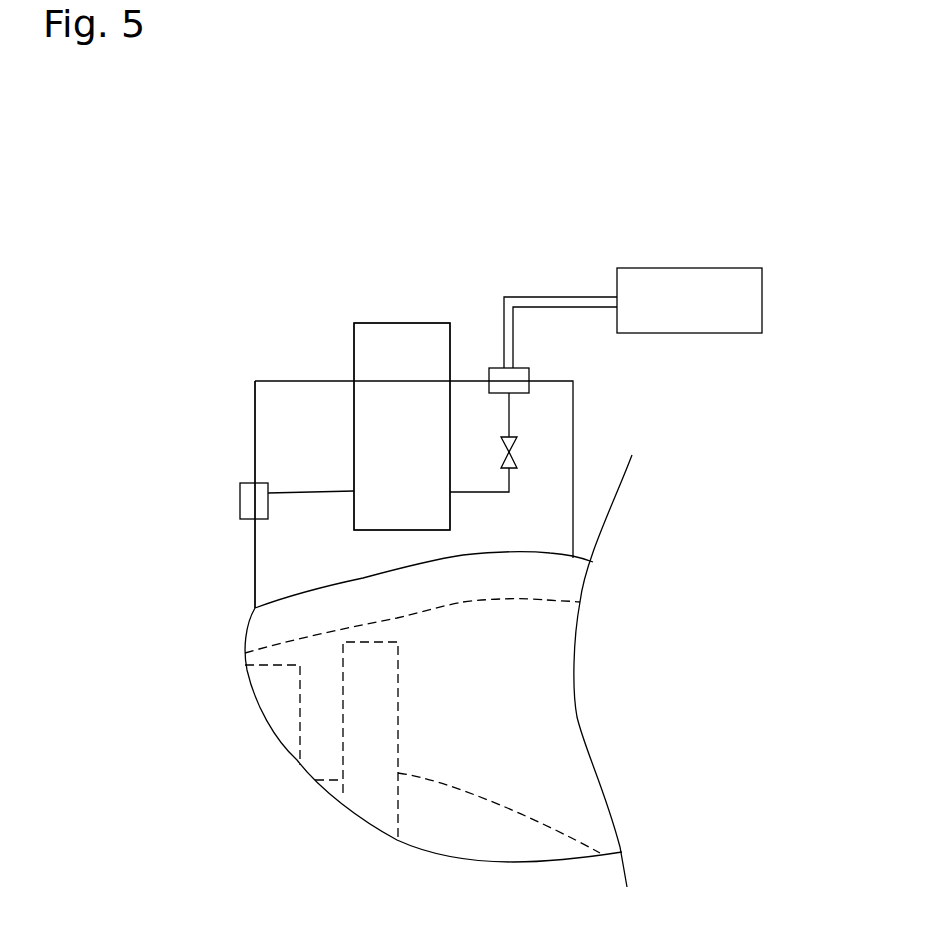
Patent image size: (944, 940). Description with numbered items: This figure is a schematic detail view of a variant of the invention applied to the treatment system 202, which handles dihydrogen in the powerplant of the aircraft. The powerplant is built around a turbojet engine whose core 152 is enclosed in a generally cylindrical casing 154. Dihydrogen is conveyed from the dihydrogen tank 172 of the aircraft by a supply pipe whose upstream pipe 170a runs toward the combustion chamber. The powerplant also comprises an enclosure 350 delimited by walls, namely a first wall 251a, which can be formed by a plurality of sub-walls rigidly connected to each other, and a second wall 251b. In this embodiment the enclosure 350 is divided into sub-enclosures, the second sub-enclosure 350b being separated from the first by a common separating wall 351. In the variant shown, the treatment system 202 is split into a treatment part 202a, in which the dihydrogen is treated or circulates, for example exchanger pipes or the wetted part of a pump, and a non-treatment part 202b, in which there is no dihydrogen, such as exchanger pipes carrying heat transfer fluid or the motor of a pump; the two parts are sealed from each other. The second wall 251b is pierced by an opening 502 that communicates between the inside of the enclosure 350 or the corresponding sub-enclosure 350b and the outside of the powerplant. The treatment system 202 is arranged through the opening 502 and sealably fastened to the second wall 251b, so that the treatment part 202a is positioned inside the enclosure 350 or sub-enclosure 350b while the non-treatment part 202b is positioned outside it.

The enclosure 350 is at (158, 364).
The common separating wall 351 is at (255, 403).
The treatment system 202 is at (290, 240).
The non-treatment part 202b is at (403, 340).
The treatment part 202a is at (383, 510).
The opening 502 is at (353, 381).
The upstream pipe 170a is at (578, 302).
The dihydrogen tank 172 is at (722, 319).
The first wall 251a is at (575, 437).
The second sub-enclosure 350b is at (545, 513).
The casing 154 is at (570, 590).
The second wall 251b is at (497, 595).
The core 152 is at (622, 759).